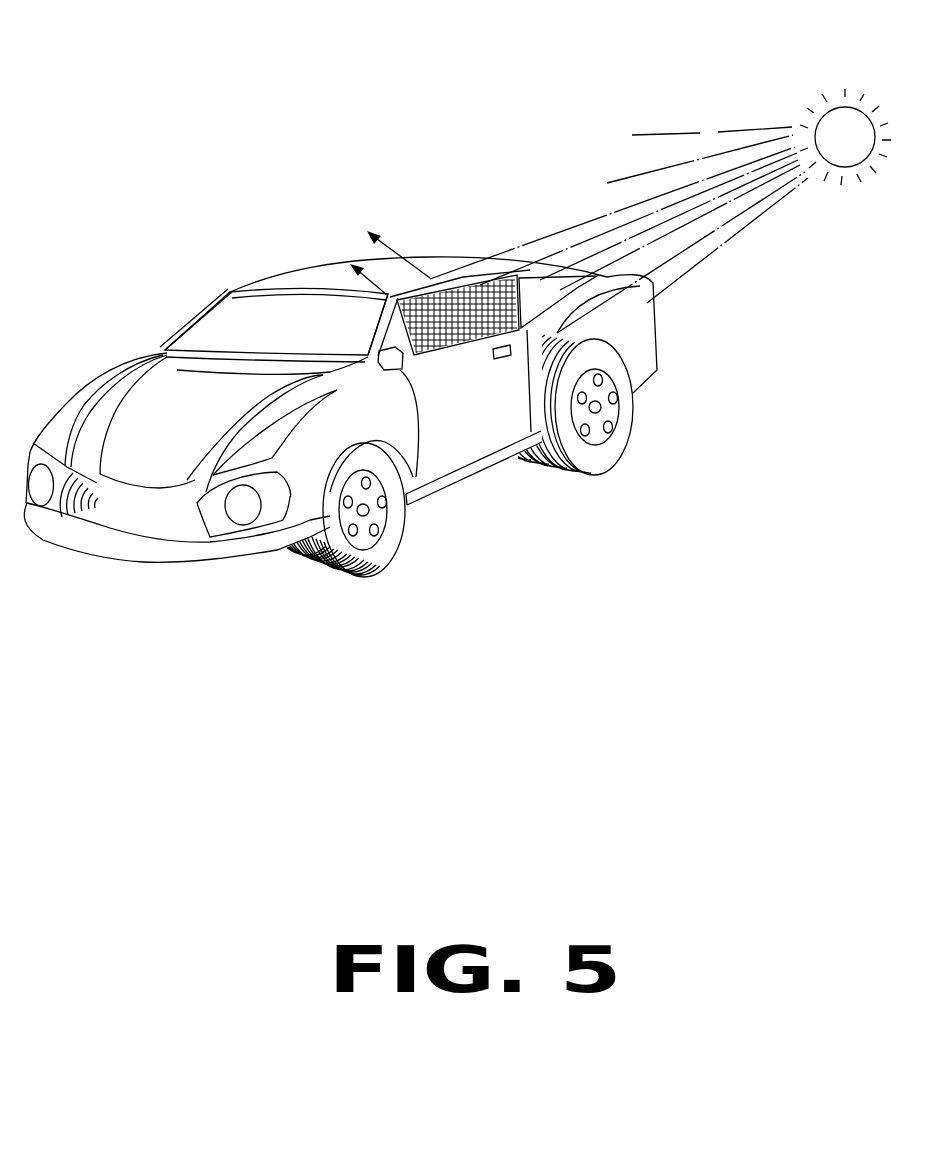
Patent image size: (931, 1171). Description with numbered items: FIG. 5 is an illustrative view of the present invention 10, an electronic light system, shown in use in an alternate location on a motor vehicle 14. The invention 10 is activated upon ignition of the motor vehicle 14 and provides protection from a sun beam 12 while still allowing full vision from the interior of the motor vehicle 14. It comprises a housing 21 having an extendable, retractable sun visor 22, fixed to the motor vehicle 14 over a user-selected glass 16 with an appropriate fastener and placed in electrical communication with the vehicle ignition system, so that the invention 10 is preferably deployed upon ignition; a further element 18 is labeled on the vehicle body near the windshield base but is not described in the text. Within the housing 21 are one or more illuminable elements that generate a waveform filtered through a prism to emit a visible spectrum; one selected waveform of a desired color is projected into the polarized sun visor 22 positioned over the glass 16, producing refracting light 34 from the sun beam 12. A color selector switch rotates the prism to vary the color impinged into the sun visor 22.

The present invention 10 is at (195, 122).
The sun beam 12 is at (670, 135).
The motor vehicle 14 is at (343, 270).
The glass 16 is at (240, 318).
The windshield base / body panel 18 is at (262, 348).
The housing 21 is at (460, 280).
The sun visor 22 is at (480, 285).
The refracting light 34 is at (397, 247).